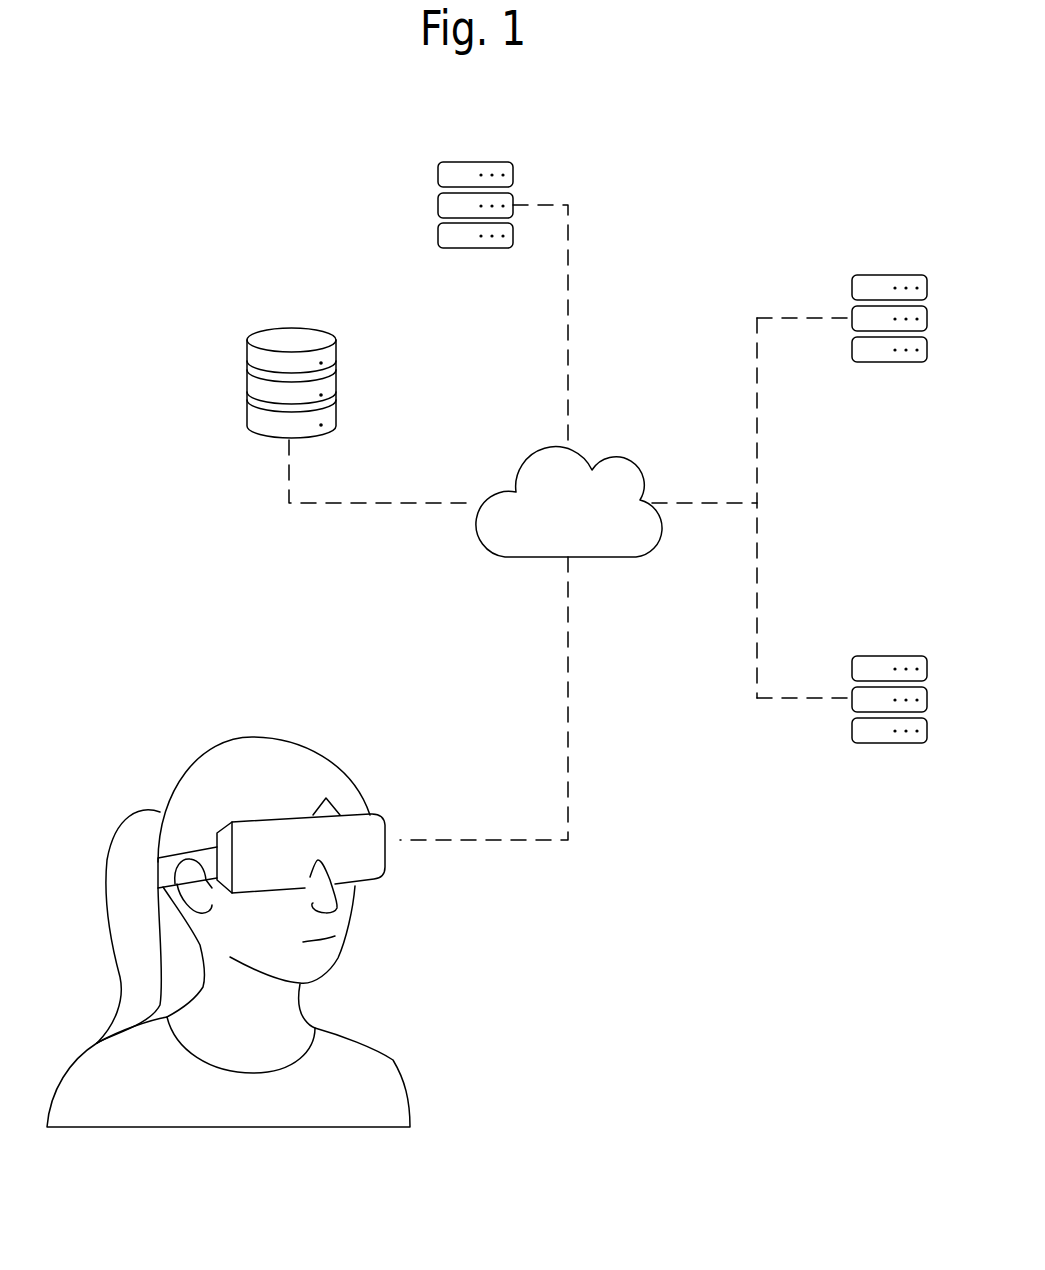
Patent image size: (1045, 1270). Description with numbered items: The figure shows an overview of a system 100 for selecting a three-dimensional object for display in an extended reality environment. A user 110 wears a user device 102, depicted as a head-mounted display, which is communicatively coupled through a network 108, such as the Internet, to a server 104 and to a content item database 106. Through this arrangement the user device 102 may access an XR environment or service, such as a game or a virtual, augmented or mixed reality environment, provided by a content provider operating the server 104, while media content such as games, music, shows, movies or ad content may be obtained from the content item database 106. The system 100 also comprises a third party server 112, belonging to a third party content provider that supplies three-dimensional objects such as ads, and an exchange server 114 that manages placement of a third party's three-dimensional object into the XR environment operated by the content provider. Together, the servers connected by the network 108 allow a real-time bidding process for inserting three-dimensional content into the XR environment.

The system 100 is at (258, 203).
The user device 102 is at (363, 830).
The server 104 is at (530, 181).
The content item database 106 is at (232, 338).
The network 108 is at (627, 478).
The user 110 is at (368, 1072).
The third party server 112 is at (892, 266).
The exchange server 114 is at (892, 636).